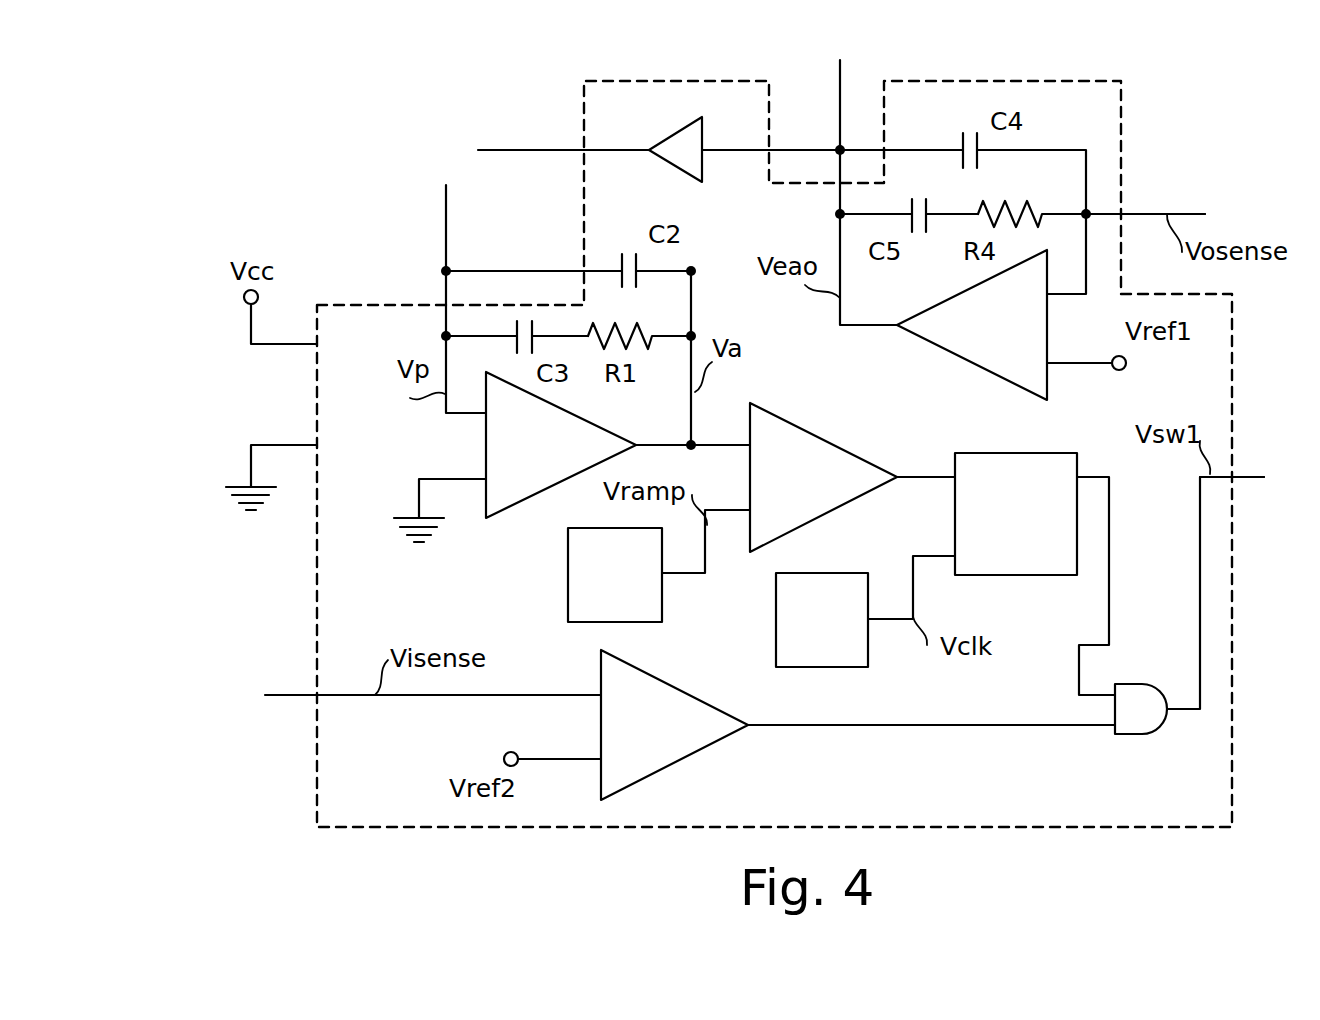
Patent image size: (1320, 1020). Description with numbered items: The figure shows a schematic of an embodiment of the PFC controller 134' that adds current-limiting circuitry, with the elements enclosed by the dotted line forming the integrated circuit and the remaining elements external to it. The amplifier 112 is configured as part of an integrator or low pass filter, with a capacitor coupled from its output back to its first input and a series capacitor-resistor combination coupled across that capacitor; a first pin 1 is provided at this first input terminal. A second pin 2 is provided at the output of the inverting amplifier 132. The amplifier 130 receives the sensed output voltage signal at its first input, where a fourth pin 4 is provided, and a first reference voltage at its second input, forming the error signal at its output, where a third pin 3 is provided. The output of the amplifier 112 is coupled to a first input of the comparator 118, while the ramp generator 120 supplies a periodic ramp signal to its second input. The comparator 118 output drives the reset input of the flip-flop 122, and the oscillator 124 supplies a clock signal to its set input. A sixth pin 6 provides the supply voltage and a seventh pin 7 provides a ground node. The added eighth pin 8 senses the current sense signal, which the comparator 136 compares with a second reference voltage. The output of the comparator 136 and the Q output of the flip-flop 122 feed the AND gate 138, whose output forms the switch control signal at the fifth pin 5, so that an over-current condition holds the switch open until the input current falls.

The first pin 1 is at (446, 268).
The second pin 2 is at (503, 150).
The third pin 3 is at (840, 148).
The fourth pin 4 is at (1151, 213).
The fifth pin 5 is at (1250, 478).
The sixth pin 6 is at (252, 344).
The seventh pin 7 is at (251, 445).
The eighth pin 8 is at (290, 695).
The amplifier 112 is at (492, 518).
The comparator 118 is at (822, 432).
The ramp generator 120 is at (568, 600).
The flip-flop 122 is at (987, 575).
The oscillator 124 is at (827, 573).
The amplifier 130 is at (995, 373).
The amplifier 132 is at (702, 182).
The controller 134' is at (774, 454).
The comparator 136 is at (683, 687).
The AND gate 138 is at (1124, 684).